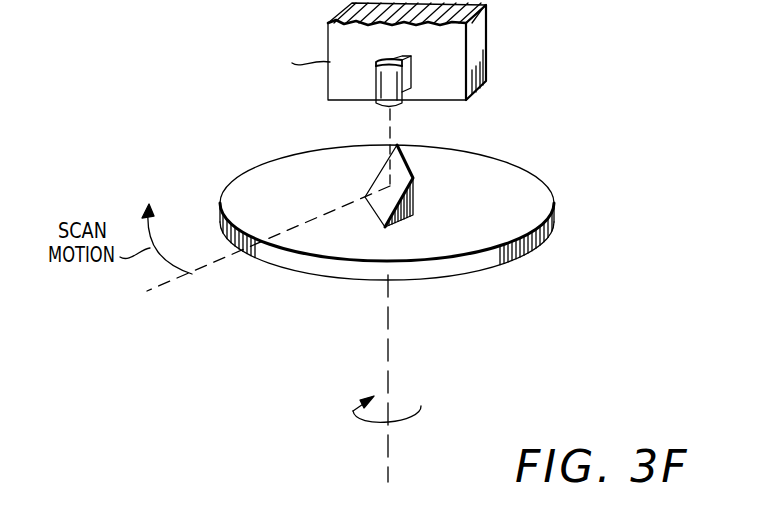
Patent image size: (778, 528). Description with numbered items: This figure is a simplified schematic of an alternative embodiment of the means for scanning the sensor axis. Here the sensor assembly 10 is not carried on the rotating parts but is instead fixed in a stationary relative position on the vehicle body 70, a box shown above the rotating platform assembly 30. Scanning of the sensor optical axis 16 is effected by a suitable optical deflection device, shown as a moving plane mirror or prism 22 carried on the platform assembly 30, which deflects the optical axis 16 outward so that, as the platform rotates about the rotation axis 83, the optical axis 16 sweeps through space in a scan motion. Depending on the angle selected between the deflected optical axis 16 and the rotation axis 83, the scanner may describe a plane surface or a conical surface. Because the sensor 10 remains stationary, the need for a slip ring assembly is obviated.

The vehicle body 70 is at (487, 48).
The sensor assembly 10 is at (399, 106).
The moving plane mirror or prism 22 is at (405, 157).
The platform assembly 30 is at (532, 188).
The optical axis 16 is at (218, 262).
The rotation axis 83 is at (390, 346).